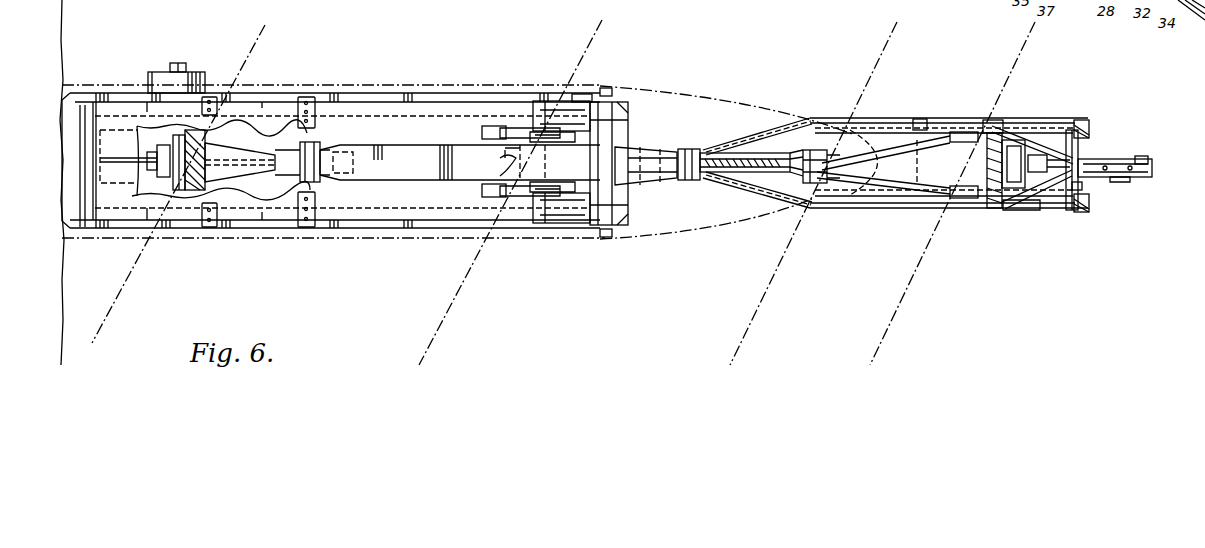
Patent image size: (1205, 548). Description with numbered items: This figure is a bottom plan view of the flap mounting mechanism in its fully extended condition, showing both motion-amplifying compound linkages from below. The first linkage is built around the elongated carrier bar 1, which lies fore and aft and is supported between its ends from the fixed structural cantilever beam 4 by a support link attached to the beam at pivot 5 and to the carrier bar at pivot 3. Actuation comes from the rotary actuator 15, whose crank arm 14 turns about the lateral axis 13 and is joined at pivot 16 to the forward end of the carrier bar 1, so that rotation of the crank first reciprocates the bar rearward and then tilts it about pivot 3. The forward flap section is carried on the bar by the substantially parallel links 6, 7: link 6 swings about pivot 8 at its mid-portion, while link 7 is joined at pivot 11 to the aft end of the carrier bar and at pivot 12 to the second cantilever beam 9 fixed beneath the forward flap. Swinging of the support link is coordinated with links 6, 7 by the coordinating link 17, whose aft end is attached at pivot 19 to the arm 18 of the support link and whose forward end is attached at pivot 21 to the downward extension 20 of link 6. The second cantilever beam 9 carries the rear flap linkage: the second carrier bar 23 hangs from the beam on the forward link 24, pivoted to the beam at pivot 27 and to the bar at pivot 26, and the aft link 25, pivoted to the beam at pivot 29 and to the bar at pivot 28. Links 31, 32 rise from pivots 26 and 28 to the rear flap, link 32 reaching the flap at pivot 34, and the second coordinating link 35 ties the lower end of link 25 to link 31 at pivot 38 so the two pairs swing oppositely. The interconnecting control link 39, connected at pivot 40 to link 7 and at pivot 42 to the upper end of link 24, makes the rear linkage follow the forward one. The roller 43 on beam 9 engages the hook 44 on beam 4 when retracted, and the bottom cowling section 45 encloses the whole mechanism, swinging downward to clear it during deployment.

The carrier bar 1 is at (427, 163).
The pivot 3 is at (638, 102).
The fixed structural cantilever beam 4 is at (473, 105).
The pivot 5 is at (607, 88).
The link 6 is at (510, 160).
The link 7 is at (742, 158).
The pivot 8 is at (510, 150).
The second cantilever beam 9 is at (773, 155).
The pivot 11 is at (695, 182).
The pivot 12 is at (783, 195).
The lateral axis 13 is at (178, 63).
The crank arm 14 is at (235, 163).
The rotary actuator 15 is at (198, 74).
The pivot 16 is at (312, 148).
The coordinating link 17 is at (530, 132).
The arm 18 is at (645, 185).
The pivot 19 is at (555, 118).
The extension 20 is at (507, 127).
The pivot 21 is at (493, 126).
The second carrier bar 23 is at (1045, 137).
The forward link 24 is at (990, 130).
The aft link 25 is at (1082, 186).
The pivot 26 is at (987, 166).
The pivot 27 is at (999, 119).
The pivot 28 is at (1085, 152).
The pivot 29 is at (1083, 120).
The link 31 is at (1025, 145).
The aft link 32 is at (1118, 182).
The pivot 34 is at (1144, 162).
The second coordinating link 35 is at (1055, 185).
The pivot 38 is at (1012, 212).
The interconnecting control link 39 is at (875, 148).
The pivot 40 is at (828, 150).
The pivot 42 is at (965, 132).
The roller 43 is at (925, 120).
The hook 44 is at (583, 94).
The bottom cowling section 45 is at (656, 240).